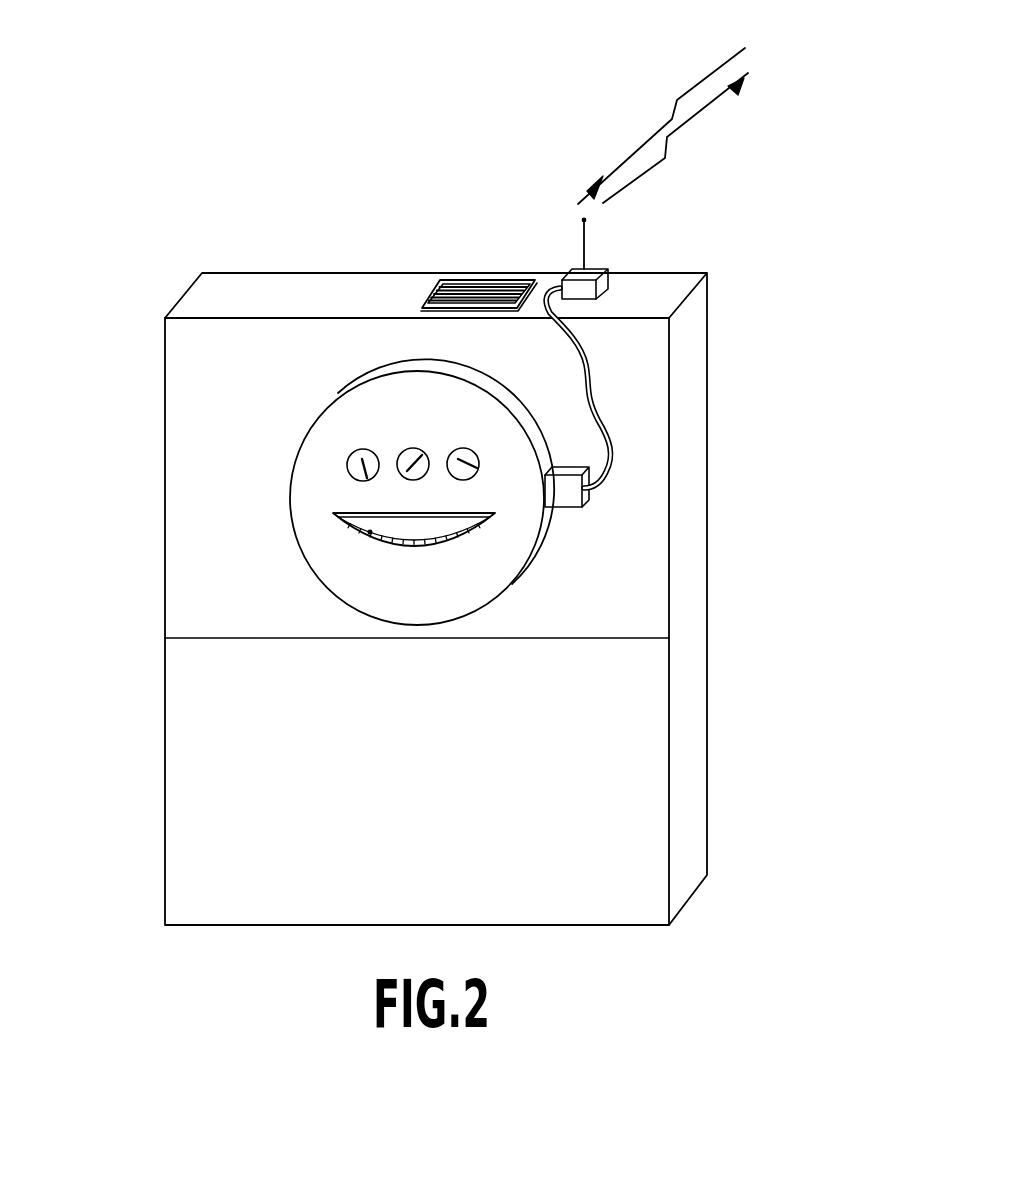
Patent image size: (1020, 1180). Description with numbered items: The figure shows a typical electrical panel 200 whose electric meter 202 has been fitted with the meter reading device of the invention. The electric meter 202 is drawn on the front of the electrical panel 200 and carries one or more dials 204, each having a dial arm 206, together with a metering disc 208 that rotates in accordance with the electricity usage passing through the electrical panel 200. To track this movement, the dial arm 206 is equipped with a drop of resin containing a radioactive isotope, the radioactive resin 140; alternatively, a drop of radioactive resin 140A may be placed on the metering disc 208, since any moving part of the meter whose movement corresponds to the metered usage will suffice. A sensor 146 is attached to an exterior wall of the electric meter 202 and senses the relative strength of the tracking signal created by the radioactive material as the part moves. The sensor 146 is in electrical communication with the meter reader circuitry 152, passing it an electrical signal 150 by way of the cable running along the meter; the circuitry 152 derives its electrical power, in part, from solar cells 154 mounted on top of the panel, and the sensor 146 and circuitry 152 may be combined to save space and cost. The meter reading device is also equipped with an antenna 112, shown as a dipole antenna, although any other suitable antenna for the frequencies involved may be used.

The electrical panel 200 is at (207, 567).
The electric meter 202 is at (290, 483).
The dial 204 is at (349, 457).
The dial arm 206 is at (453, 452).
The radioactive resin 140 is at (463, 450).
The drop of radioactive resin 140A is at (370, 532).
The metering disc 208 is at (404, 544).
The sensor 146 is at (563, 490).
The electrical signal 150 is at (603, 427).
The meter reader circuitry 152 is at (608, 270).
The antenna 112 is at (586, 236).
The solar cells 154 is at (471, 282).